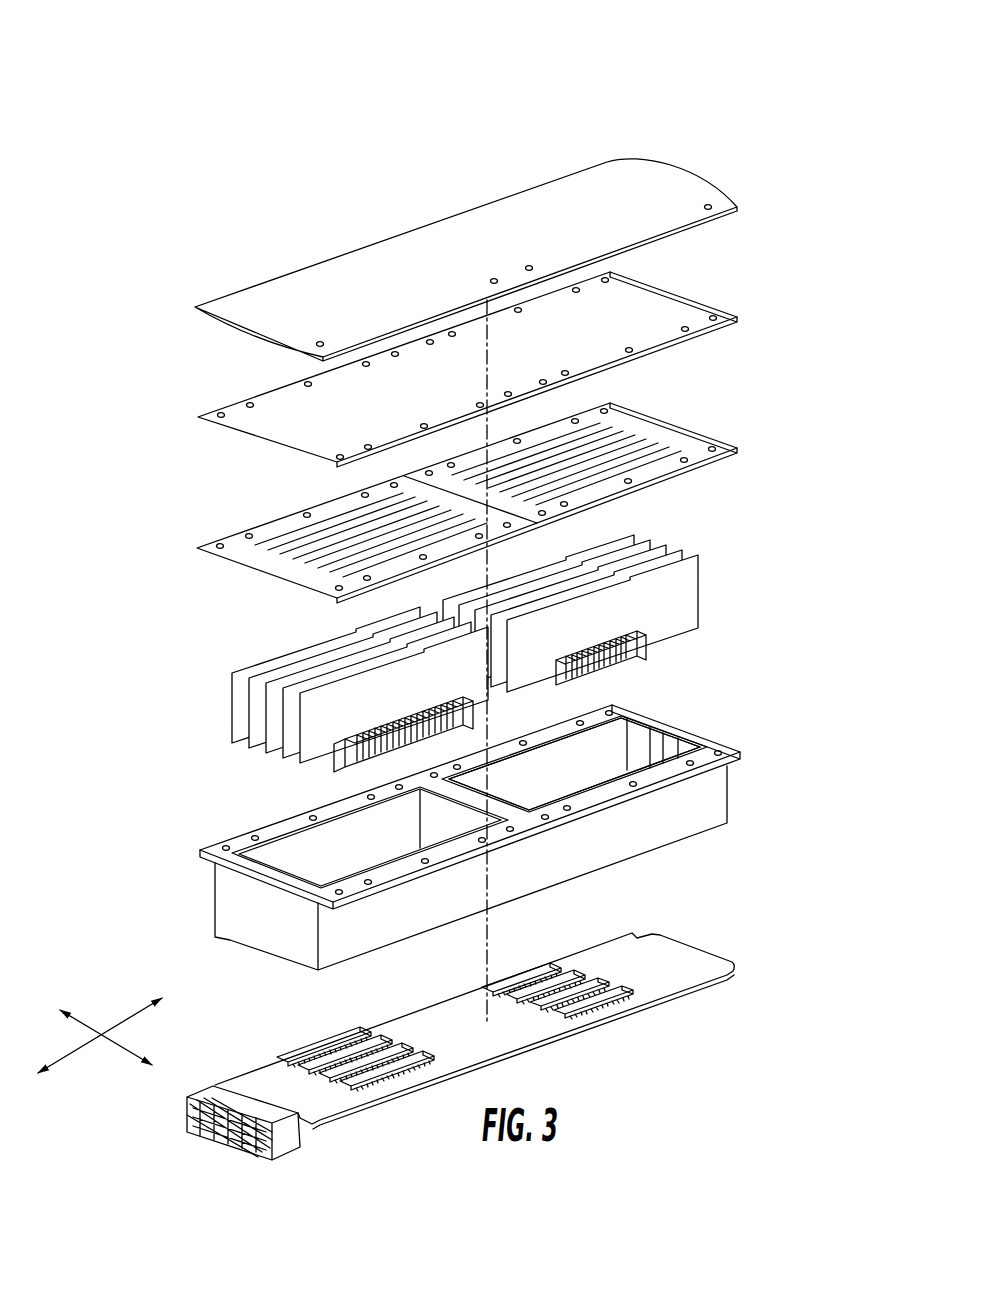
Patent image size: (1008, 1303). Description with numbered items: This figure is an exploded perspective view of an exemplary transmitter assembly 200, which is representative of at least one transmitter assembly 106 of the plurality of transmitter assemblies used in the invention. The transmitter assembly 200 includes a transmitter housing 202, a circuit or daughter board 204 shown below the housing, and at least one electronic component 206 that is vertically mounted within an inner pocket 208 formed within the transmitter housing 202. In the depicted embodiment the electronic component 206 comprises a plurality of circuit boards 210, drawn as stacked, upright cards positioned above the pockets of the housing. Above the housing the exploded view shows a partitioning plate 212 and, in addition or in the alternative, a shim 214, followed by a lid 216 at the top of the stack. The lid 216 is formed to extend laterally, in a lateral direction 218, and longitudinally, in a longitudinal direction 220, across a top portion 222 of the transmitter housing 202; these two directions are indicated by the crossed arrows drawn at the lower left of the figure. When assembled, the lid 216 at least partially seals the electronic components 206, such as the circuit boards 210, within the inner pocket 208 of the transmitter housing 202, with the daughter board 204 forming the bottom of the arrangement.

The transmitter assembly 200 is at (591, 90).
The transmitter assembly 106 is at (769, 82).
The lid 216 is at (650, 190).
The shim 214 is at (701, 291).
The partitioning plate 212 is at (697, 441).
The circuit boards 210 is at (660, 546).
The electronic component 206 is at (488, 627).
The transmitter housing 202 is at (519, 817).
The inner pocket 208 is at (617, 753).
The top portion 222 is at (675, 770).
The daughter board 204 is at (765, 957).
The longitudinal direction 220 is at (127, 1018).
The lateral direction 218 is at (115, 1043).